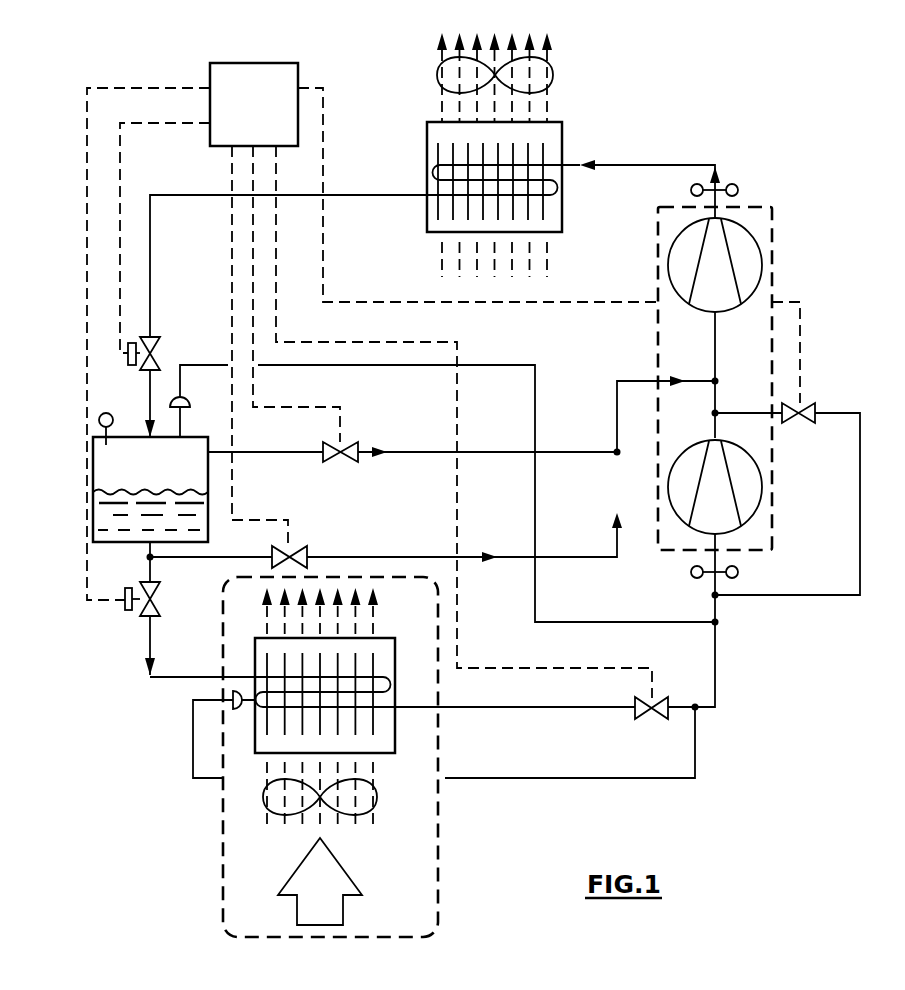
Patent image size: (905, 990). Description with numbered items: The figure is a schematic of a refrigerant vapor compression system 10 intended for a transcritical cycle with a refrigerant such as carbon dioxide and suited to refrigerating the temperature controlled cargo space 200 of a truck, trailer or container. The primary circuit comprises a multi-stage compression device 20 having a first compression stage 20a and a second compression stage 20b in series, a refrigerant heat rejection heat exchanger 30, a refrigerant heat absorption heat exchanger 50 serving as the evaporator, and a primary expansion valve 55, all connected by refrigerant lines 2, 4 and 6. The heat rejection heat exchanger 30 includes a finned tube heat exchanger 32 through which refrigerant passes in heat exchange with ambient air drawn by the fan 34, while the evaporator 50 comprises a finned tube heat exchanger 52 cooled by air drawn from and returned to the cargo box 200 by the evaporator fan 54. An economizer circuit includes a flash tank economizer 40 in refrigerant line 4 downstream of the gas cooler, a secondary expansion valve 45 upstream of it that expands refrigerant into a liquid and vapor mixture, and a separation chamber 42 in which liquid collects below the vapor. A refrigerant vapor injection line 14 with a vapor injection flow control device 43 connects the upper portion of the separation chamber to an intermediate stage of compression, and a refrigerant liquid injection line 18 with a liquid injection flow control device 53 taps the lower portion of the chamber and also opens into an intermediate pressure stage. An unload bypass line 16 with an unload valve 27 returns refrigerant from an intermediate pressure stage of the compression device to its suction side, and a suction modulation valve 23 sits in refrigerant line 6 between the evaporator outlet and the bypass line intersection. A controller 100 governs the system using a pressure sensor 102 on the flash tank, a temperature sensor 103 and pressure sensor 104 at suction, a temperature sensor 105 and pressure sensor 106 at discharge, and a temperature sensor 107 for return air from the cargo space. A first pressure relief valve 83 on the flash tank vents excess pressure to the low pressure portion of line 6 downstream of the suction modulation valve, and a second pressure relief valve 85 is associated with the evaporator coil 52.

The controller 100 is at (269, 63).
The fan 34 is at (553, 78).
The refrigerant heat rejection heat exchanger 30 is at (562, 140).
The finned tube heat exchanger 32 is at (558, 186).
The refrigerant line 2 is at (667, 165).
The refrigerant vapor compression system 10 is at (713, 131).
The temperature sensor 105 is at (691, 190).
The pressure sensor 106 is at (738, 187).
The multi-stage compression device 20 is at (658, 299).
The second compression stage 20b is at (762, 285).
The first compression stage 20a is at (758, 508).
The temperature sensor 103 is at (691, 572).
The pressure sensor 104 is at (738, 572).
The unload bypass line 16 is at (860, 505).
The unload valve 27 is at (800, 403).
The refrigerant vapor injection line 14 is at (266, 452).
The vapor injection flow control device 43 is at (346, 462).
The refrigerant liquid injection line 18 is at (414, 557).
The liquid injection flow control device 53 is at (292, 546).
The first pressure relief valve 83 is at (182, 400).
The refrigerant line 4 is at (372, 195).
The secondary expansion valve 45 is at (160, 350).
The pressure sensor 102 is at (106, 413).
The flash tank economizer 40 is at (120, 489).
The separation chamber 42 is at (162, 477).
The primary expansion valve 55 is at (160, 597).
The finned tube heat exchanger 52 is at (384, 680).
The second pressure relief valve 85 is at (238, 690).
The refrigerant heat absorption heat exchanger 50 is at (395, 735).
The evaporator fan 54 is at (377, 797).
The temperature sensor 107 is at (340, 890).
The cargo space 200 is at (438, 878).
The refrigerant line 6 is at (600, 707).
The suction modulation valve 23 is at (650, 719).